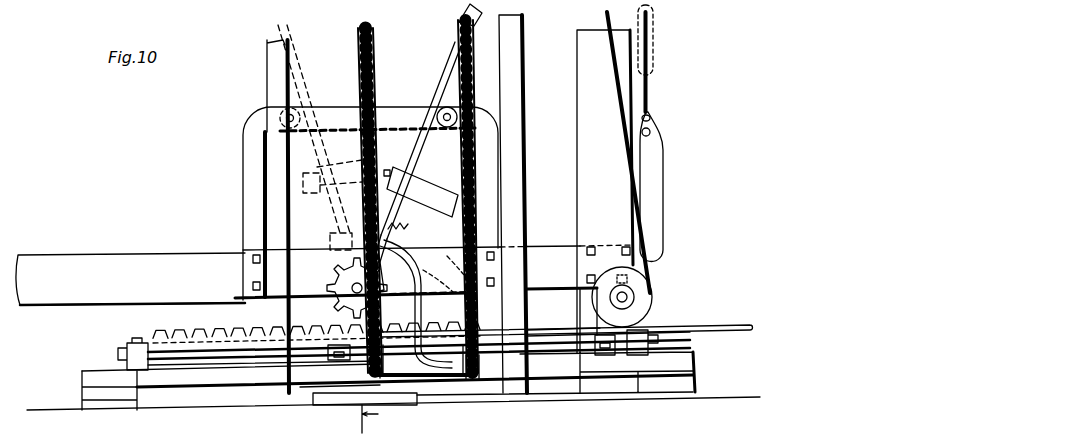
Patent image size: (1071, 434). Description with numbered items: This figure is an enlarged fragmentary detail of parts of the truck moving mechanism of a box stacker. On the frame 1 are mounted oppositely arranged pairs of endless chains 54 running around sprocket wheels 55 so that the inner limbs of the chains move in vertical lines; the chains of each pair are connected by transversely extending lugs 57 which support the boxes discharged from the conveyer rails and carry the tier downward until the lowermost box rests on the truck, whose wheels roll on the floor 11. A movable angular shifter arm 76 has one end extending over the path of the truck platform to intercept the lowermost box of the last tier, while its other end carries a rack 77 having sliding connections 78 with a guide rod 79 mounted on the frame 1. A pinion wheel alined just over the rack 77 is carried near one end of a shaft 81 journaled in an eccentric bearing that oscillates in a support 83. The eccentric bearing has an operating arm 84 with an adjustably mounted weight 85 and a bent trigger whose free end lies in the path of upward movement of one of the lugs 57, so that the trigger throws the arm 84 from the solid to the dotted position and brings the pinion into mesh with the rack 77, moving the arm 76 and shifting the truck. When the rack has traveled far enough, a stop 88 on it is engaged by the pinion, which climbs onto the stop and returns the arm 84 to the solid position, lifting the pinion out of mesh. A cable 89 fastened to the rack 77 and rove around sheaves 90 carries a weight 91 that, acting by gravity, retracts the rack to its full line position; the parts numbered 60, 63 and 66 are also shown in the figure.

The frame 1 is at (585, 213).
The floor 11 is at (725, 383).
The endless chains 54 is at (458, 62).
The sprocket wheels 55 is at (467, 380).
The lugs 57 is at (458, 367).
The ratchet wheel 60 is at (335, 307).
The pitch mark 63 is at (386, 417).
The curved guide tube 66 is at (423, 276).
The shifter arm 76 is at (710, 318).
The rack 77 is at (428, 323).
The sliding connections 78 is at (607, 350).
The guide rod 79 is at (558, 343).
The shaft 81 is at (380, 275).
The support 83 is at (350, 390).
The operating arm 84 is at (413, 153).
The weight 85 is at (432, 197).
The stop 88 is at (540, 322).
The cable 89 is at (648, 267).
The sheaves 90 is at (638, 295).
The weight 91 is at (648, 220).